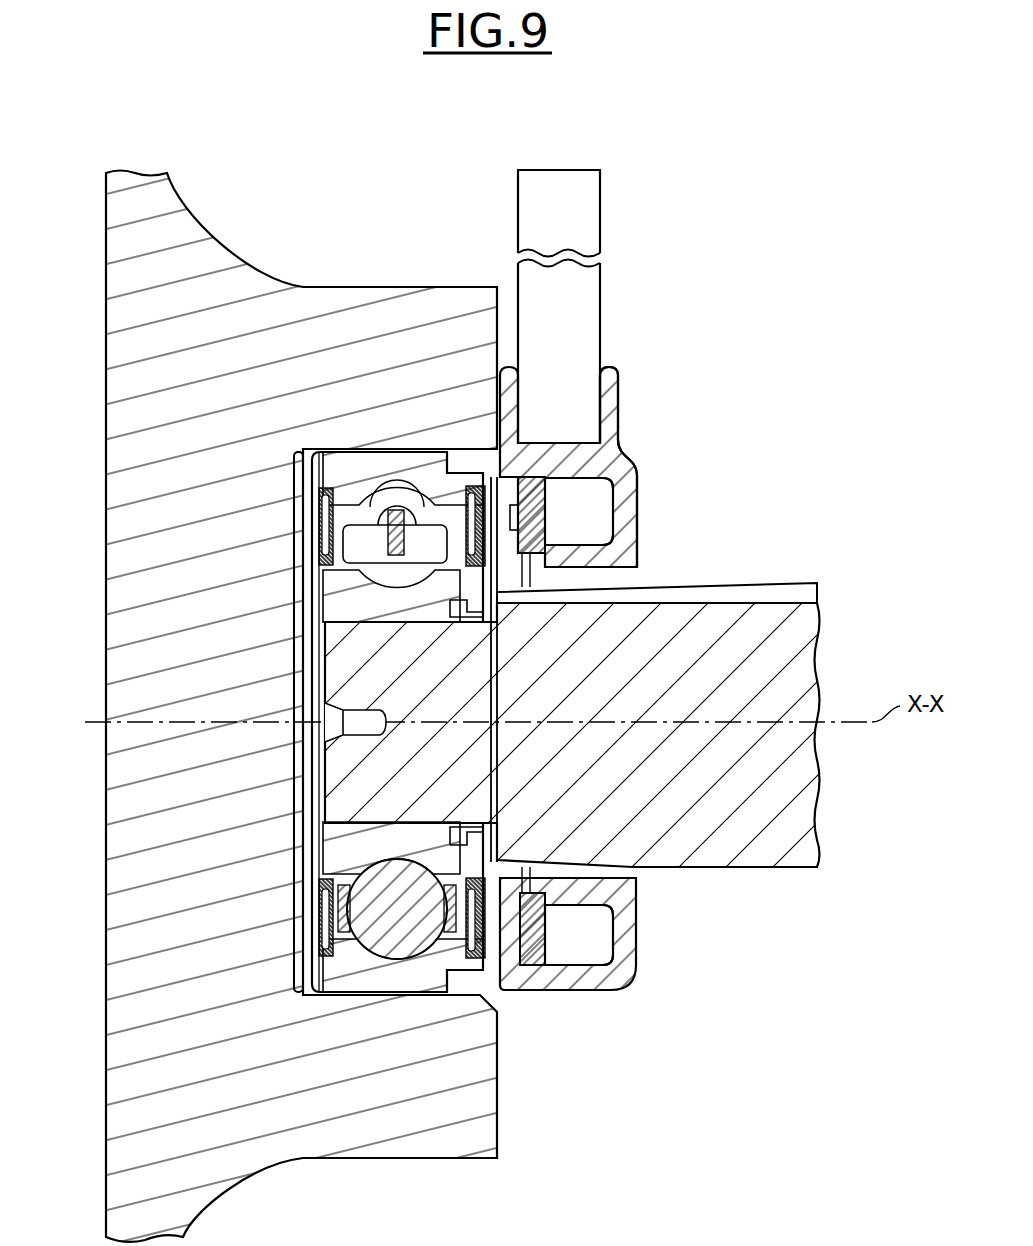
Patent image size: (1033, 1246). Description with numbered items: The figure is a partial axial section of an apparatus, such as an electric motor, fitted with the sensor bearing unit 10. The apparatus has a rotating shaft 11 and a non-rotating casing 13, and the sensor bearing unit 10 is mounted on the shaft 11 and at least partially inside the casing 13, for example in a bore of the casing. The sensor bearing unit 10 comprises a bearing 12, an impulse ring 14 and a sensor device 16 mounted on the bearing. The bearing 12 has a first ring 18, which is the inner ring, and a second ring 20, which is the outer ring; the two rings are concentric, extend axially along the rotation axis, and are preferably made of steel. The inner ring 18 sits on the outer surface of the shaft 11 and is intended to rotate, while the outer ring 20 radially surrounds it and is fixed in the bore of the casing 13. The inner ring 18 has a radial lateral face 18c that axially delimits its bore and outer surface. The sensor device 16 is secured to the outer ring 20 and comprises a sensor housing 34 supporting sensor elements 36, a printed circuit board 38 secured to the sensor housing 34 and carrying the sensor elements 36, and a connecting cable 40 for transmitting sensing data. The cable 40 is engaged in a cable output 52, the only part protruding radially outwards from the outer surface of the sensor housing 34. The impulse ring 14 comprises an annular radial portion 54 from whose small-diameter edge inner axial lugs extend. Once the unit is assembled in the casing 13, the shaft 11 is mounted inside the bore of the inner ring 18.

The sensor bearing unit 10 is at (400, 160).
The rotating shaft 11 is at (762, 862).
The bearing 12 is at (298, 540).
The non-rotating casing 13 is at (114, 455).
The impulse ring 14 is at (500, 567).
The sensor device 16 is at (644, 380).
The first ring 18 is at (328, 598).
The radial lateral face 18c is at (500, 606).
The second ring 20 is at (368, 452).
The sensor housing 34 is at (628, 428).
The sensor elements 36 is at (557, 514).
The printed circuit board 38 is at (545, 492).
The connecting cable 40 is at (598, 305).
The cable output 52 is at (610, 393).
The annular radial portion 54 is at (592, 903).